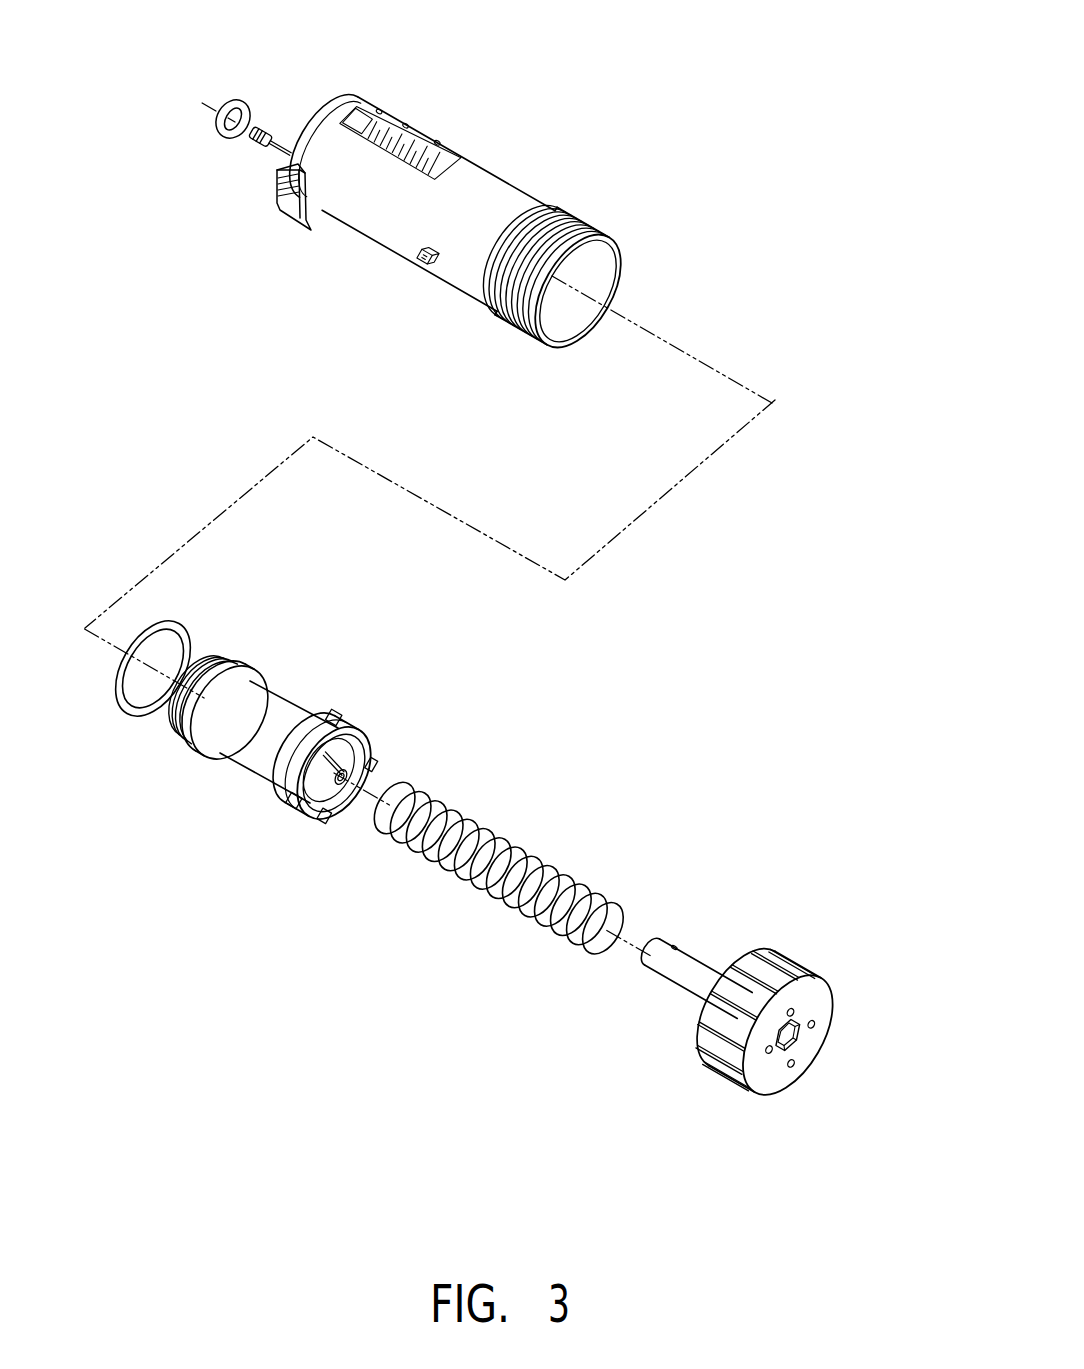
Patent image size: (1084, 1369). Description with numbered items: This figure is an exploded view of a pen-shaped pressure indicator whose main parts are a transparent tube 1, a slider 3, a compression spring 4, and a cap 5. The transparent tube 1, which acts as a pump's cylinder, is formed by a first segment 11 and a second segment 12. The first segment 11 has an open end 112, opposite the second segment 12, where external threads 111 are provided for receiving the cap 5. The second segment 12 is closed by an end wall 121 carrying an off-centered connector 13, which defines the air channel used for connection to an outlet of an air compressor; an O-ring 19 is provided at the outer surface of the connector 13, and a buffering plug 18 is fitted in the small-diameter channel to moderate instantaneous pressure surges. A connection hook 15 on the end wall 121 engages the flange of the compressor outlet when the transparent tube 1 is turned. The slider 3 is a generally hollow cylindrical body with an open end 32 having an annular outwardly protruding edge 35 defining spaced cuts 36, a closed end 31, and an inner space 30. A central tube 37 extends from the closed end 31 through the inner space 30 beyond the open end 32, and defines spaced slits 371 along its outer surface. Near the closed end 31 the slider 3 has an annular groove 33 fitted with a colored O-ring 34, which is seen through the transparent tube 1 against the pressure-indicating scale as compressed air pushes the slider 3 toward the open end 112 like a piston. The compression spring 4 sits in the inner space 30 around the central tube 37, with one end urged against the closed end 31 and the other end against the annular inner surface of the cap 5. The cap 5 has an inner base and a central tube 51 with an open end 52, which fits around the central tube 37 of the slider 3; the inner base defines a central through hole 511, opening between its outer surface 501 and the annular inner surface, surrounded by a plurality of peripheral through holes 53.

The transparent tube 1 is at (495, 182).
The first segment 11 is at (534, 205).
The external threads 111 is at (502, 317).
The open end 112 is at (567, 320).
The second segment 12 is at (318, 140).
The end wall 121 is at (341, 97).
The connector 13 is at (288, 162).
The connection hook 15 is at (283, 200).
The buffering plug 18 is at (250, 146).
The O-ring 19 is at (218, 128).
The slider 3 is at (298, 713).
The inner space 30 is at (313, 818).
The closed end 31 is at (208, 678).
The open end 32 is at (368, 732).
The annular groove 33 is at (247, 672).
The colored O-ring 34 is at (176, 624).
The annular outwardly protruding edge 35 is at (310, 816).
The cuts 36 is at (290, 795).
The central tube 37 is at (368, 744).
The slits 371 is at (370, 765).
The compression spring 4 is at (522, 905).
The cap 5 is at (722, 1040).
The outer surface 501 is at (828, 985).
The central tube 51 is at (675, 973).
The central through hole 511 is at (800, 1037).
The open end 52 is at (676, 946).
The peripheral through holes 53 is at (795, 1011).